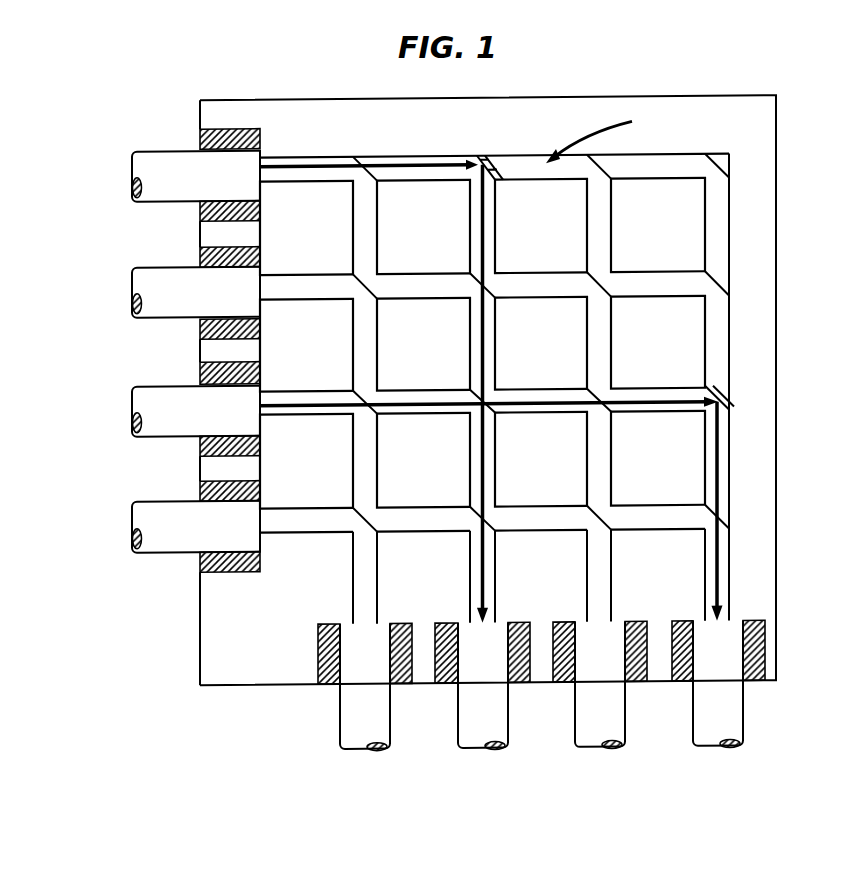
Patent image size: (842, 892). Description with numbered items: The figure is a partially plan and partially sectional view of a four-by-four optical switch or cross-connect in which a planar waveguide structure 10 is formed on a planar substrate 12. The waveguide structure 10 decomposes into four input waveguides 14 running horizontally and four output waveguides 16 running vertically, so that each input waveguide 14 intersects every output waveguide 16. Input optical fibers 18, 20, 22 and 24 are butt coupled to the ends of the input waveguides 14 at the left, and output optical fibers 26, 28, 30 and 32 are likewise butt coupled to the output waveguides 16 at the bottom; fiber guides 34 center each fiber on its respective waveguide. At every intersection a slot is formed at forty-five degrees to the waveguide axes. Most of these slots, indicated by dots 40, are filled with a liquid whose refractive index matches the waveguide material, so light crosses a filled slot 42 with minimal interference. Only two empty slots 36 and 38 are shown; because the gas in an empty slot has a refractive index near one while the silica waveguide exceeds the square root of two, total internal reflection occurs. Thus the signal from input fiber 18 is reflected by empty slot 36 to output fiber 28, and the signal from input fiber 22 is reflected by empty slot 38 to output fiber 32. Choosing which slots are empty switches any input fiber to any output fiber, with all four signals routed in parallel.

The planar waveguide structure 10 is at (611, 137).
The planar substrate 12 is at (777, 118).
The input waveguides 14 is at (330, 156).
The output waveguides 16 is at (705, 564).
The input optical fiber 18 is at (152, 149).
The input optical fiber 20 is at (152, 265).
The input optical fiber 22 is at (152, 384).
The input optical fiber 24 is at (152, 499).
The output optical fiber 26 is at (340, 742).
The output optical fiber 28 is at (458, 742).
The output optical fiber 30 is at (575, 742).
The output optical fiber 32 is at (693, 740).
The fiber guides 34 is at (200, 570).
The empty slot 36 is at (490, 156).
The empty slot 38 is at (718, 395).
The dots 40 is at (364, 292).
The filled slot 42 is at (478, 398).